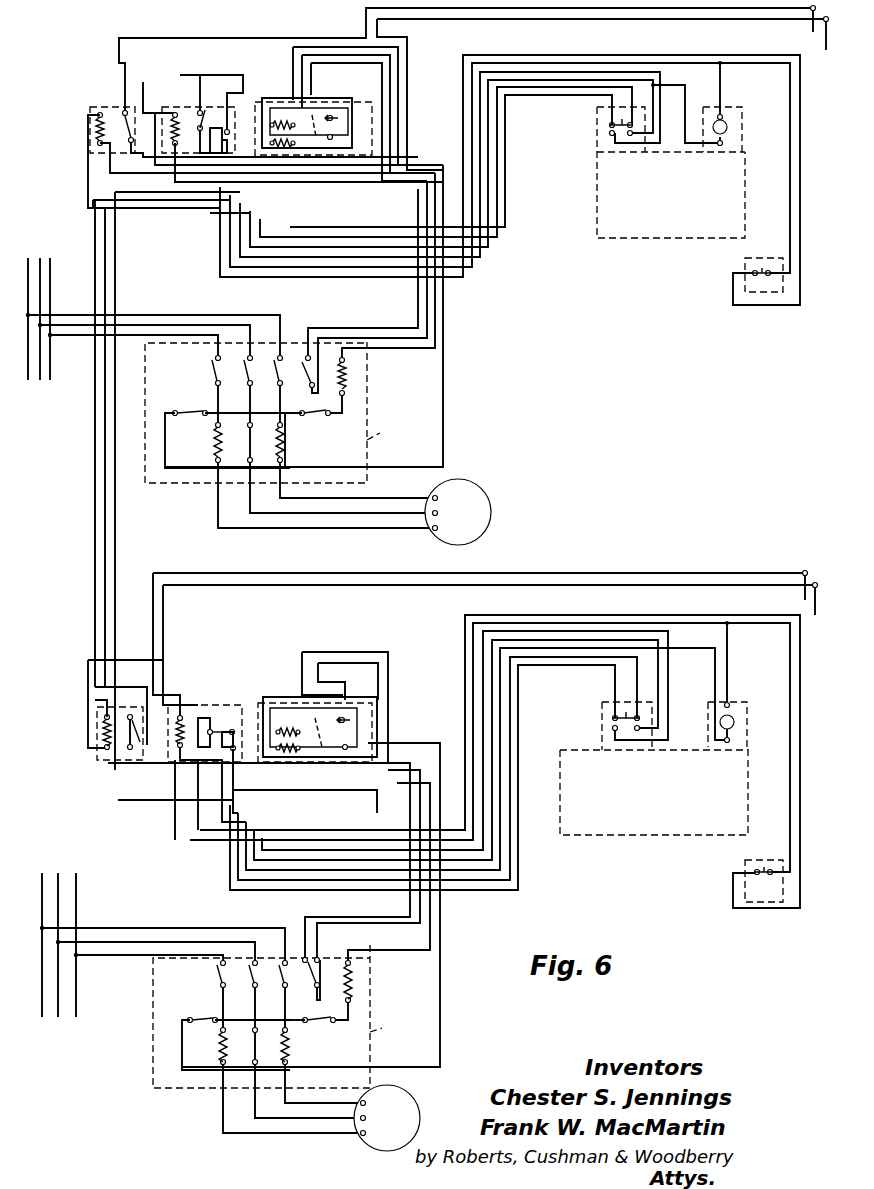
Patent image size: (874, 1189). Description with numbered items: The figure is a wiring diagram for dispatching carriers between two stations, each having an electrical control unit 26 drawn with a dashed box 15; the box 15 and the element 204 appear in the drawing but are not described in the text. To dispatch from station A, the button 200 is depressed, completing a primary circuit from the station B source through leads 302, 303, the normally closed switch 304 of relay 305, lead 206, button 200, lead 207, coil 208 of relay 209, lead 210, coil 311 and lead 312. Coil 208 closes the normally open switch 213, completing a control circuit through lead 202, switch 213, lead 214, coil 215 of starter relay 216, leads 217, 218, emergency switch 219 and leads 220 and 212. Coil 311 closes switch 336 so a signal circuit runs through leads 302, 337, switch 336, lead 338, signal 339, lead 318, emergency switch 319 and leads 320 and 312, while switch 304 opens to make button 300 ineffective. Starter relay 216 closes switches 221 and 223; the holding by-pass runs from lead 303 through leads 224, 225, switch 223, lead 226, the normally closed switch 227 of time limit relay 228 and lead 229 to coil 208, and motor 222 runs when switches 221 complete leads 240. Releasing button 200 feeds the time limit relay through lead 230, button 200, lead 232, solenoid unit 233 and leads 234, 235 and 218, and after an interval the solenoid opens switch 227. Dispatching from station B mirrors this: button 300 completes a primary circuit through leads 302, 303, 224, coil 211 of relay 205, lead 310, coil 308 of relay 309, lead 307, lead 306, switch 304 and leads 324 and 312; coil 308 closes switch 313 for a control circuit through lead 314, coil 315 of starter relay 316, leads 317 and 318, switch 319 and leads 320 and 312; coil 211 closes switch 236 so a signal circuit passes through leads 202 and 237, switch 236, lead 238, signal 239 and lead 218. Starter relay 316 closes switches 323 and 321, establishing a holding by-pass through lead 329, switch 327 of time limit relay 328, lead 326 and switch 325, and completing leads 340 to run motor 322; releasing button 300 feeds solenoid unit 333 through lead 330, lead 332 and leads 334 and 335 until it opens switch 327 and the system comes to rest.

The station control box 15 is at (652, 487).
The electrical control unit 26 is at (590, 127).
The button 200 is at (610, 133).
The lead 202 is at (555, 64).
The armature 204 is at (230, 110).
The relay 205 is at (170, 80).
The lead 206 is at (205, 75).
The lead 207 is at (480, 92).
The coil 208 is at (97, 130).
The relay 209 is at (90, 158).
The lead 210 is at (115, 235).
The coil 211 is at (178, 112).
The lead 212 is at (420, 50).
The normally open switch 213 is at (95, 113).
The lead 214 is at (445, 190).
The coil 215 is at (347, 390).
The starter relay 216 is at (380, 425).
The lead 217 is at (447, 360).
The lead 218 is at (722, 75).
The emergency switch 219 is at (760, 282).
The lead 220 is at (480, 50).
The switches 221 is at (270, 366).
The motor 222 is at (470, 513).
The switch 223 is at (285, 350).
The lead 224 is at (170, 165).
The lead 225 is at (155, 153).
The lead 226 is at (383, 352).
The normally closed switch 227 is at (345, 86).
The time limit relay 228 is at (340, 138).
The lead 229 is at (262, 72).
The lead 230 is at (145, 168).
The lead 232 is at (590, 80).
The solenoid unit 233 is at (300, 118).
The lead 234 is at (275, 125).
The lead 235 is at (333, 118).
The normally open switch 236 is at (198, 70).
The lead 237 is at (143, 82).
The lead 238 is at (210, 215).
The signal 239 is at (738, 103).
The leads 240 is at (215, 410).
The button 300 is at (612, 728).
The lead 302 is at (670, 583).
The lead 303 is at (95, 580).
The normally closed switch 304 is at (240, 735).
The relay 305 is at (200, 718).
The lead 306 is at (648, 675).
The lead 307 is at (640, 697).
The coil 308 is at (100, 716).
The relay 309 is at (85, 742).
The lead 310 is at (100, 393).
The coil 311 is at (182, 715).
The lead 312 is at (160, 605).
The normally open switch 313 is at (130, 755).
The lead 314 is at (150, 780).
The coil 315 is at (352, 992).
The starter relay 316 is at (372, 1025).
The lead 317 is at (405, 955).
The lead 318 is at (483, 630).
The emergency switch 319 is at (765, 880).
The lead 320 is at (465, 665).
The switches 321 is at (282, 970).
The motor 322 is at (385, 1122).
The switch 323 is at (305, 985).
The lead 324 is at (232, 730).
The switch 325 is at (275, 798).
The lead 326 is at (330, 665).
The switch 327 is at (348, 745).
The time limit relay 328 is at (360, 748).
The lead 329 is at (88, 660).
The lead 330 is at (120, 800).
The lead 332 is at (612, 660).
The solenoid unit 333 is at (285, 720).
The lead 334 is at (345, 718).
The lead 335 is at (362, 660).
The normally open switch 336 is at (210, 705).
The lead 337 is at (130, 770).
The lead 338 is at (655, 655).
The signal 339 is at (730, 712).
The leads 340 is at (125, 955).